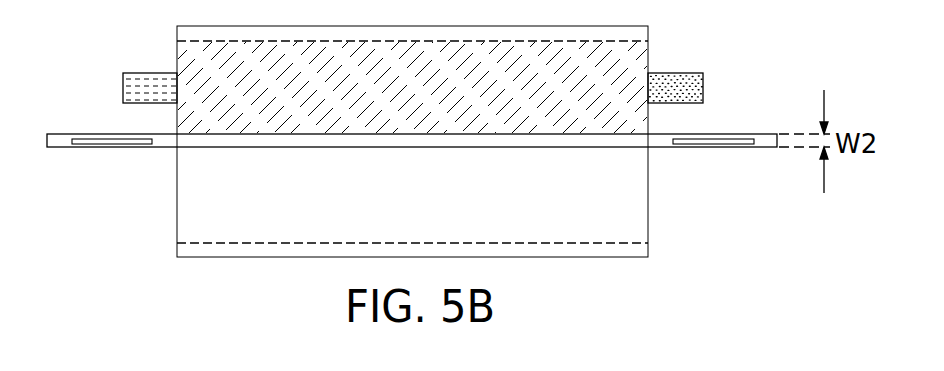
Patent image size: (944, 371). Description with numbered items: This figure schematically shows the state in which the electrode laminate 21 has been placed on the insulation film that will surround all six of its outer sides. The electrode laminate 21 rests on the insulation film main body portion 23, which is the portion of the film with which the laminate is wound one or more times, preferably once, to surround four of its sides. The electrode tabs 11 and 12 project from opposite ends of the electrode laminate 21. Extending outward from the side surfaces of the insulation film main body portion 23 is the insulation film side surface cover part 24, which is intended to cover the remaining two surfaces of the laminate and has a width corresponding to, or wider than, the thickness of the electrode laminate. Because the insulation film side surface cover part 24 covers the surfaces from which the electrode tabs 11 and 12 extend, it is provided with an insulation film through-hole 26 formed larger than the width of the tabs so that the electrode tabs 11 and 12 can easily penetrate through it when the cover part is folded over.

The electrode tab 11 is at (704, 88).
The electrode tab 12 is at (123, 87).
The electrode laminate 21 is at (640, 52).
The insulation film main body portion 23 is at (636, 222).
The insulation film side surface cover part 24 is at (767, 144).
The insulation film through-hole 26 is at (710, 143).